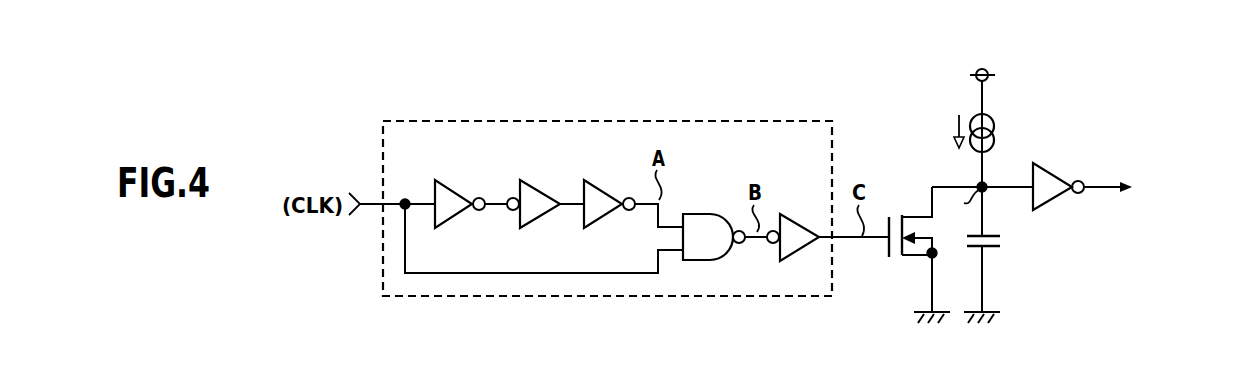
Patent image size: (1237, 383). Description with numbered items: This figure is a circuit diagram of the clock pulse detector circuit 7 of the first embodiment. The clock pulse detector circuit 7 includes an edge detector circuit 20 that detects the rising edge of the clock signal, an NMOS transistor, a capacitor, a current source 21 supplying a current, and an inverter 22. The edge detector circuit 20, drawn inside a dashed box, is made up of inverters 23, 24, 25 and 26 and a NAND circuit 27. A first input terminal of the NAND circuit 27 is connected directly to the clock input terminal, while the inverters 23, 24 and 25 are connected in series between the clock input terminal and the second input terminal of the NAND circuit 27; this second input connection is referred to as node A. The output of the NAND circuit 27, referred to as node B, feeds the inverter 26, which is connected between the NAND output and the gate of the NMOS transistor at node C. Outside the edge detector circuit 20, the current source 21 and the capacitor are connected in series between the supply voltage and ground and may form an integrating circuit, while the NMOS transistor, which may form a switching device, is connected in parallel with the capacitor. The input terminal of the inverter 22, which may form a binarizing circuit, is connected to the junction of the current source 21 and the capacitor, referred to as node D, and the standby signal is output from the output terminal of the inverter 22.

The clock pulse detector circuit 7 is at (806, 68).
The edge detector circuit 20 is at (628, 110).
The current source 21 is at (993, 118).
The inverter 22 is at (1059, 172).
The inverter 23 is at (459, 188).
The inverter 24 is at (544, 188).
The inverter 25 is at (606, 188).
The inverter 26 is at (801, 216).
The NAND circuit 27 is at (704, 212).